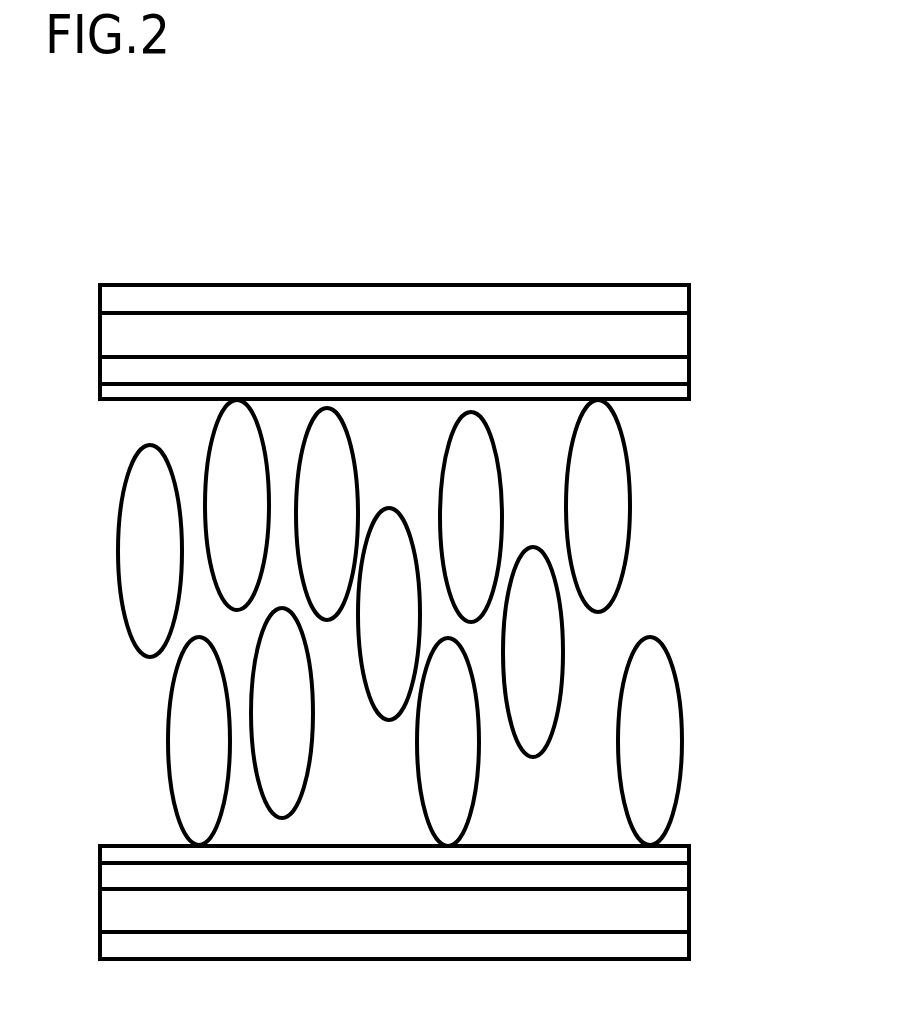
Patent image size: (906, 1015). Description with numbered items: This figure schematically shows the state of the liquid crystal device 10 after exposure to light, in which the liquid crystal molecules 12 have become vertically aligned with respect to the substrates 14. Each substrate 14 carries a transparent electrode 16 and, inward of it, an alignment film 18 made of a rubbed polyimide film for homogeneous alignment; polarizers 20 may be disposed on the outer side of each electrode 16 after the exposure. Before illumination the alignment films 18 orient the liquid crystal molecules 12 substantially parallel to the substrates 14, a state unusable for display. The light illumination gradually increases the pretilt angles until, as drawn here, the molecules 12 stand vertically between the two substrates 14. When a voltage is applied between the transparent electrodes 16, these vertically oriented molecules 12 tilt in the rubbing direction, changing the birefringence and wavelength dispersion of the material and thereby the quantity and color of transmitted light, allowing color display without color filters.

The liquid crystal display device 10 is at (442, 582).
The liquid crystal molecules 12 is at (602, 522).
The substrates 14 is at (672, 338).
The electrode 16 is at (678, 372).
The alignment films 18 is at (682, 397).
The polarizers 20 is at (688, 294).